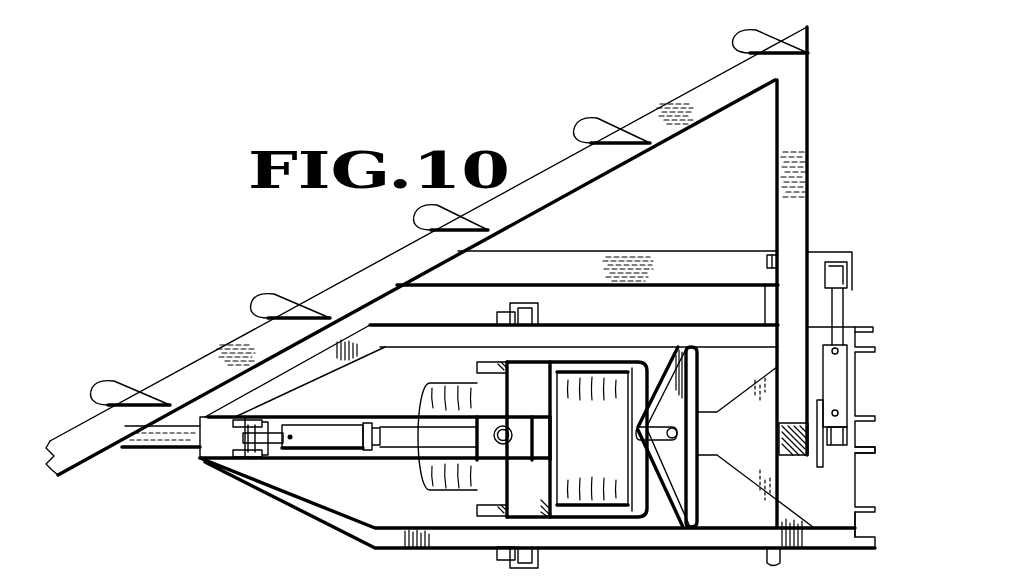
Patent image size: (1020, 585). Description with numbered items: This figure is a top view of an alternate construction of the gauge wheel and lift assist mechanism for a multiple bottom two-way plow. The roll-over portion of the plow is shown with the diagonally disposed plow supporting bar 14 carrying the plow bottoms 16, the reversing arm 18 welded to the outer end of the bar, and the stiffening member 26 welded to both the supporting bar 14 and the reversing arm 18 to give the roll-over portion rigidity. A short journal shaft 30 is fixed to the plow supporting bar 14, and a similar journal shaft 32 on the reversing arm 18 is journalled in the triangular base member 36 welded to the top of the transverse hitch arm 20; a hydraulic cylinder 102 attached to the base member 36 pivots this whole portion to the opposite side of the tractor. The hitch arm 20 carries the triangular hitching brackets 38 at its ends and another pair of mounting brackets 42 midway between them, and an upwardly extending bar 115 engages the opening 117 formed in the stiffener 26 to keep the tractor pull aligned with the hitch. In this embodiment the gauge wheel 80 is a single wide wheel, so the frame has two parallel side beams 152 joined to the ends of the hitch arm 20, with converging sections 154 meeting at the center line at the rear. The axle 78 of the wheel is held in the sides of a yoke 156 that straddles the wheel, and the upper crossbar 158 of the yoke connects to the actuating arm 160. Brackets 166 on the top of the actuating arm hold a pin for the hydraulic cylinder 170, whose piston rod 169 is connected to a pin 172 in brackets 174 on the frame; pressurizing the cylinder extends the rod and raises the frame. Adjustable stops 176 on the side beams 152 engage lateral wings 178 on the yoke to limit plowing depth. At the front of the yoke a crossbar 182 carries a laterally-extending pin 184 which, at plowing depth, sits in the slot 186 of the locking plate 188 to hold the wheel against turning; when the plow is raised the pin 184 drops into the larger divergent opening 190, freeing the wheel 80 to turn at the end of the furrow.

The plow supporting bar 14 is at (232, 352).
The plow bottoms 16 is at (110, 381).
The reversing arm 18 is at (800, 149).
The hitch arm 20 is at (858, 394).
The stiffening member 26 is at (540, 259).
The journal shaft 30 is at (158, 443).
The journal shaft 32 is at (806, 456).
The base member 36 is at (862, 452).
The mounting brackets 38 is at (872, 326).
The mounting brackets 42 is at (868, 444).
The axle 78 is at (522, 520).
The gauge wheel 80 is at (458, 483).
The hydraulic cylinder 102 is at (848, 372).
The bar 115 is at (766, 268).
The opening 117 is at (769, 257).
The side beams 152 is at (604, 325).
The converging sections 154 is at (327, 368).
The yoke 156 is at (633, 358).
The upper crossbar 158 is at (500, 376).
The actuating arm 160 is at (403, 447).
The brackets 166 is at (387, 458).
The piston rod 169 is at (276, 437).
The hydraulic cylinder 170 is at (333, 430).
The pin 172 is at (225, 456).
The brackets 174 is at (241, 460).
The adjustable stops 176 is at (497, 315).
The lateral wings 178 is at (547, 304).
The crossbar 182 is at (650, 519).
The pin 184 is at (662, 426).
The slot 186 is at (680, 424).
The locking plate 188 is at (698, 490).
The divergent opening 190 is at (687, 421).